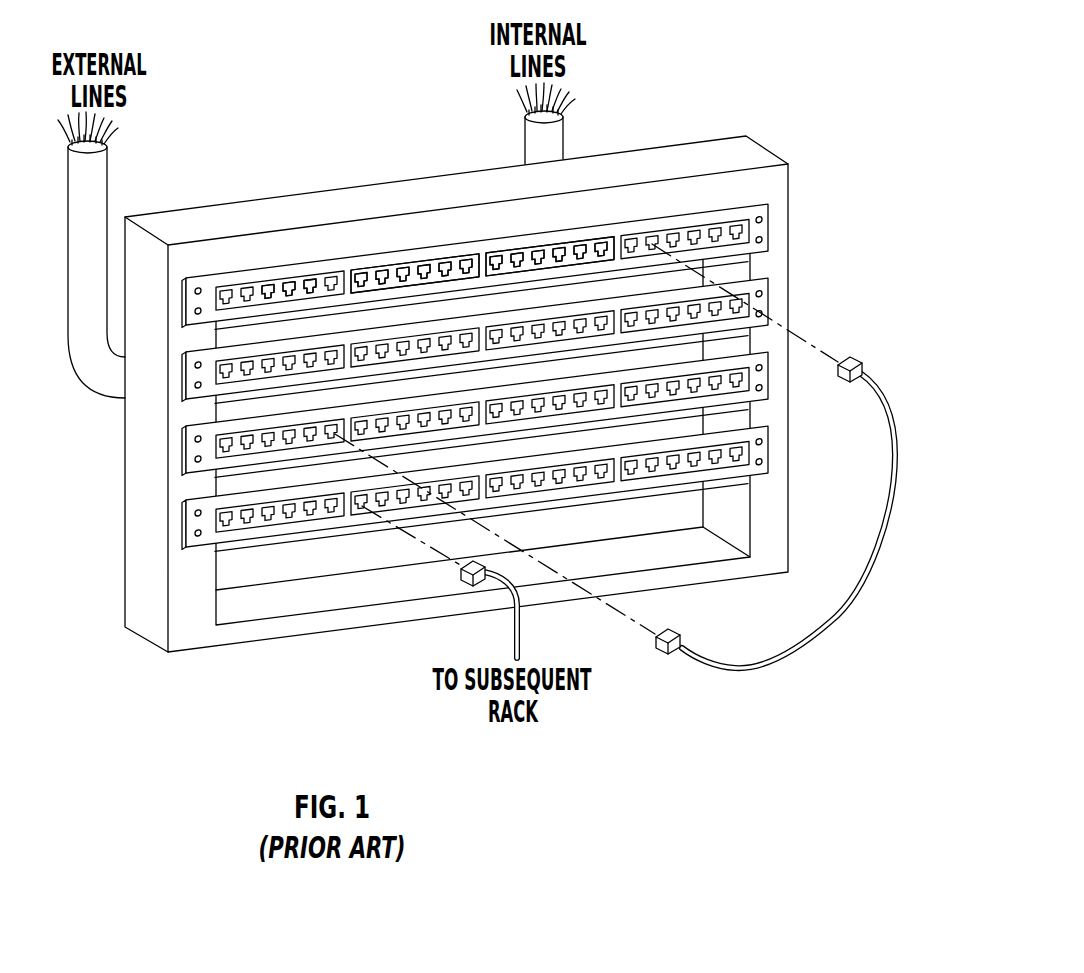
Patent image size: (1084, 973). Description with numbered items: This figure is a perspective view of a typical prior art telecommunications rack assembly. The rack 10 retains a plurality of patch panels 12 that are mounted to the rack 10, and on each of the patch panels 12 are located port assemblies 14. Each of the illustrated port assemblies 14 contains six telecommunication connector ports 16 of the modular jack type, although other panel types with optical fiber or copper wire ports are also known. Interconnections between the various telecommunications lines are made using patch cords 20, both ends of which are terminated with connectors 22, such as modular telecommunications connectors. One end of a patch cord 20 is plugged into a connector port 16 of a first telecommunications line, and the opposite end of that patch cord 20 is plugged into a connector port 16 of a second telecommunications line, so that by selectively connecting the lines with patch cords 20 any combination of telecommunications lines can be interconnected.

The rack 10 is at (662, 162).
The patch panels 12 is at (762, 300).
The port assemblies 14 is at (500, 250).
The telecommunication connector ports 16 is at (312, 281).
The patch cords 20 is at (887, 546).
The connectors 22 is at (857, 362).